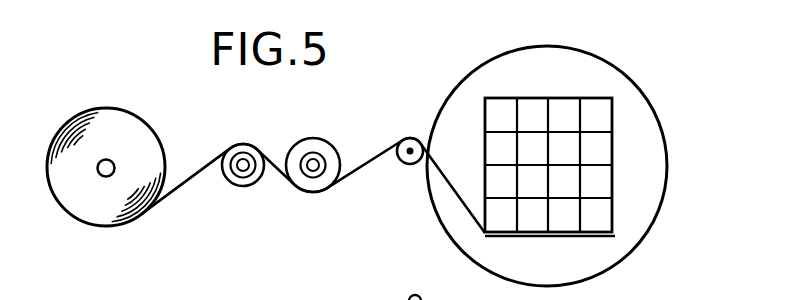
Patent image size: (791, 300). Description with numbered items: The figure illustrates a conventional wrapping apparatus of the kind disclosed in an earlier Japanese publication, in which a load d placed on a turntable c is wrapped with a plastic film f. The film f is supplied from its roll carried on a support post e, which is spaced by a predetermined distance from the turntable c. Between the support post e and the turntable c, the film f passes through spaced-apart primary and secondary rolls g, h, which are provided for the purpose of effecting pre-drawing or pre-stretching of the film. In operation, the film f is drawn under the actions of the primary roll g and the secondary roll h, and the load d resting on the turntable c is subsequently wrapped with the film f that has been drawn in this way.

The support post e is at (142, 128).
The plastic film f is at (203, 174).
The primary roll g is at (257, 184).
The secondary roll h is at (330, 146).
The turntable c is at (643, 210).
The load d is at (600, 117).